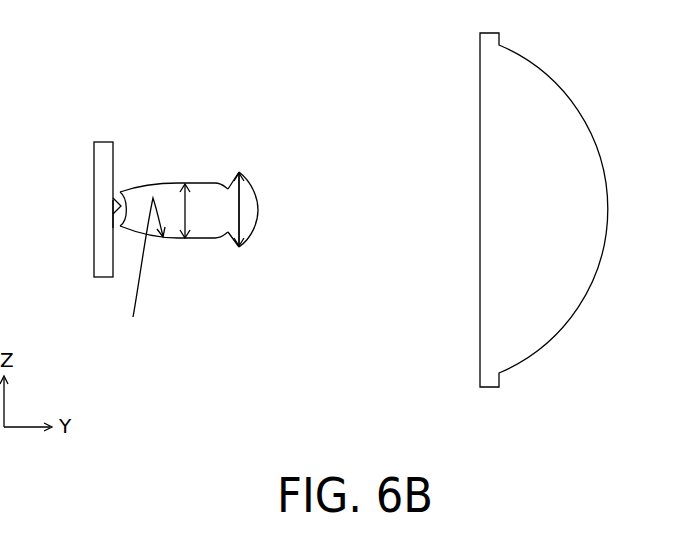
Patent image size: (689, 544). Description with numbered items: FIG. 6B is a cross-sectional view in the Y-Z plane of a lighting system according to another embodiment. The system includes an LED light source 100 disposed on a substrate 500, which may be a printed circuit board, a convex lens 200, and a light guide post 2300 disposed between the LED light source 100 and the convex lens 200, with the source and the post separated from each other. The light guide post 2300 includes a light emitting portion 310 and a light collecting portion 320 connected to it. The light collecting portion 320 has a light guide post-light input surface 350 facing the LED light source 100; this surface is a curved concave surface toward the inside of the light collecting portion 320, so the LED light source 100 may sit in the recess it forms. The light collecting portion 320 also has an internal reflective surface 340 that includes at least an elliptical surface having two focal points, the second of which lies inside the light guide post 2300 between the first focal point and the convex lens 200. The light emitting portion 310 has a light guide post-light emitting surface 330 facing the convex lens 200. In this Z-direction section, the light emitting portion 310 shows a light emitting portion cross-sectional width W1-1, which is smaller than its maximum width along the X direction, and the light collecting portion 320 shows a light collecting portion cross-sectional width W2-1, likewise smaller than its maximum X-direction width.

The LED light source 100 is at (116, 207).
The convex lens 200 is at (579, 111).
The light emitting portion 310 is at (243, 249).
The light collecting portion 320 is at (193, 240).
The light guide post-light emitting surface 330 is at (259, 212).
The internal reflective surface 340 is at (138, 270).
The light guide post-light input surface 350 is at (115, 203).
The substrate 500 is at (103, 142).
The light guide post 2300 is at (226, 195).
The light emitting portion cross-sectional width W1-1 is at (254, 193).
The light collecting portion cross-sectional width W2-1 is at (187, 210).